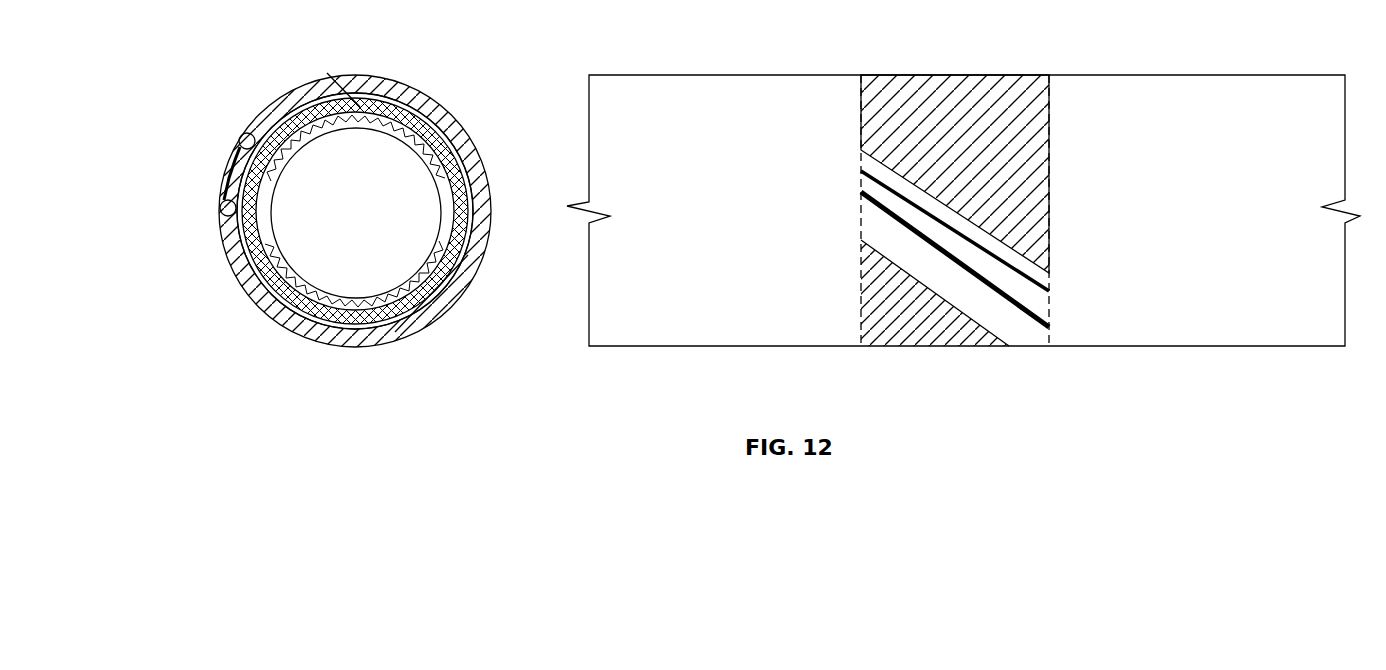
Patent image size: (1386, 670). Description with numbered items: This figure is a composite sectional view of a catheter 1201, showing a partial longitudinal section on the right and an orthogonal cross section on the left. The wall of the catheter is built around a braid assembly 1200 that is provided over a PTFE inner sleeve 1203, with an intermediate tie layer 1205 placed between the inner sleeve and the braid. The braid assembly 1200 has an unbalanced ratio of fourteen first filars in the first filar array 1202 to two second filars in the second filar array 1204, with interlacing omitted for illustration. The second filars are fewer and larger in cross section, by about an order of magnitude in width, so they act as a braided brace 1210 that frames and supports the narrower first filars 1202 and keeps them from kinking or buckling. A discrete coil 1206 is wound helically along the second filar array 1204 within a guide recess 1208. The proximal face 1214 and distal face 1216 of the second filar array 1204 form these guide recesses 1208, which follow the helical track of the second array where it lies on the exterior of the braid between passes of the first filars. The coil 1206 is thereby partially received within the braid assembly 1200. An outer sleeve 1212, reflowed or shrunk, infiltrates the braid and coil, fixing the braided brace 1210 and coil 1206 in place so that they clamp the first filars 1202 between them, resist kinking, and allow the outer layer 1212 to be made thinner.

The braid assembly 1200 is at (251, 121).
The catheter 1201 is at (423, 339).
The first filar array 1202 is at (424, 113).
The inner sleeve 1203 is at (434, 165).
The second filar array 1204 is at (234, 177).
The tie layer 1205 is at (349, 92).
The coil 1206 is at (242, 146).
The guide recess 1208 is at (868, 170).
The braided brace 1210 is at (1040, 298).
The outer sleeve 1212 is at (367, 337).
The proximal face 1214 is at (943, 273).
The distal face 1216 is at (903, 198).